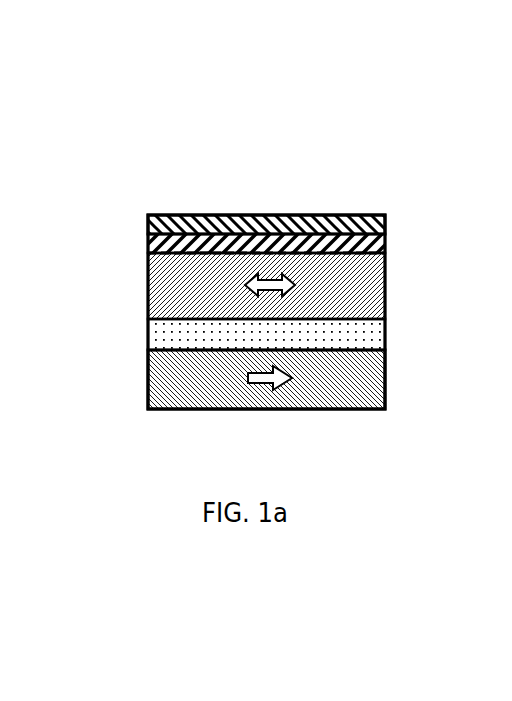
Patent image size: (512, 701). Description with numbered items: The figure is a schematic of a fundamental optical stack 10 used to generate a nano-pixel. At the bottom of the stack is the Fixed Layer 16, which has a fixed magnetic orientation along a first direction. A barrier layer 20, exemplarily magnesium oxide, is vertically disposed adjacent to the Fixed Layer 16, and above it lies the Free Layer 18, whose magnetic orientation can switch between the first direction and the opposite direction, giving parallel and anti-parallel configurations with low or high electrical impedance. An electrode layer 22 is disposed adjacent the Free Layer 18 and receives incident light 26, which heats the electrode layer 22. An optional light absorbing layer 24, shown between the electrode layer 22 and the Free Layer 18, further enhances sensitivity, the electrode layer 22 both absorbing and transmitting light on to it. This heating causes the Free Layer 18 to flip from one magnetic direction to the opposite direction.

The fundamental optical stack 10 is at (117, 131).
The Fixed Layer 16 is at (386, 387).
The Free Layer 18 is at (386, 285).
The barrier layer 20 is at (148, 339).
The electrode layer 22 is at (345, 216).
The light absorbing layer 24 is at (386, 243).
The incident light 26 is at (264, 203).